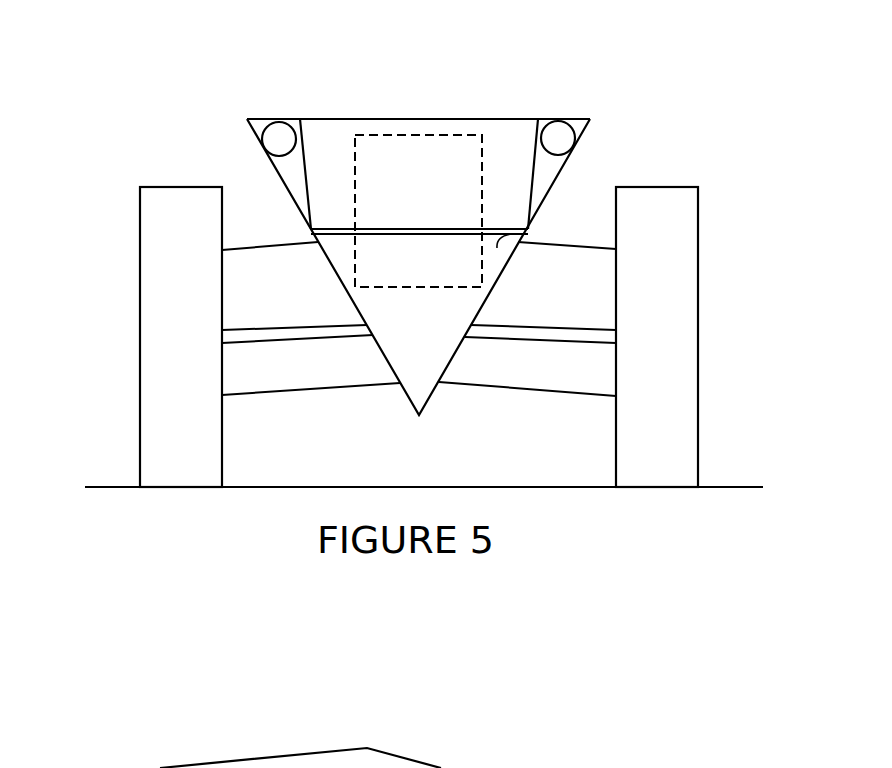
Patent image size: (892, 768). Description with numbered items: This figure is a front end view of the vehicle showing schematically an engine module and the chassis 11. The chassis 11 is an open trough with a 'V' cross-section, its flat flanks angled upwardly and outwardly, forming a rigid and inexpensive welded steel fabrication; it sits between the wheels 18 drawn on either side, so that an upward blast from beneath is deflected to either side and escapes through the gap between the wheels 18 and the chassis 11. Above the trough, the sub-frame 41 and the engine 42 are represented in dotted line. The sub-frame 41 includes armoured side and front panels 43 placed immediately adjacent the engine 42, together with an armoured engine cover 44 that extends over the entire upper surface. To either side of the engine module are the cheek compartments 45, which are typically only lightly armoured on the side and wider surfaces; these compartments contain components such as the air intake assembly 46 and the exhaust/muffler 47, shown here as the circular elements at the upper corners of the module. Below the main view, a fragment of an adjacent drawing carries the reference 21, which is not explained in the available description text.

The chassis 11 is at (383, 355).
The wheels 18 is at (158, 253).
The surface 21 is at (485, 767).
The sub-frame 41 is at (527, 228).
The engine 42 is at (420, 160).
The armoured side and front panels 43 is at (307, 160).
The armoured engine cover 44 is at (475, 120).
The cheek compartments 45 is at (290, 182).
The air intake assembly 46 is at (277, 140).
The exhaust/muffler 47 is at (558, 138).